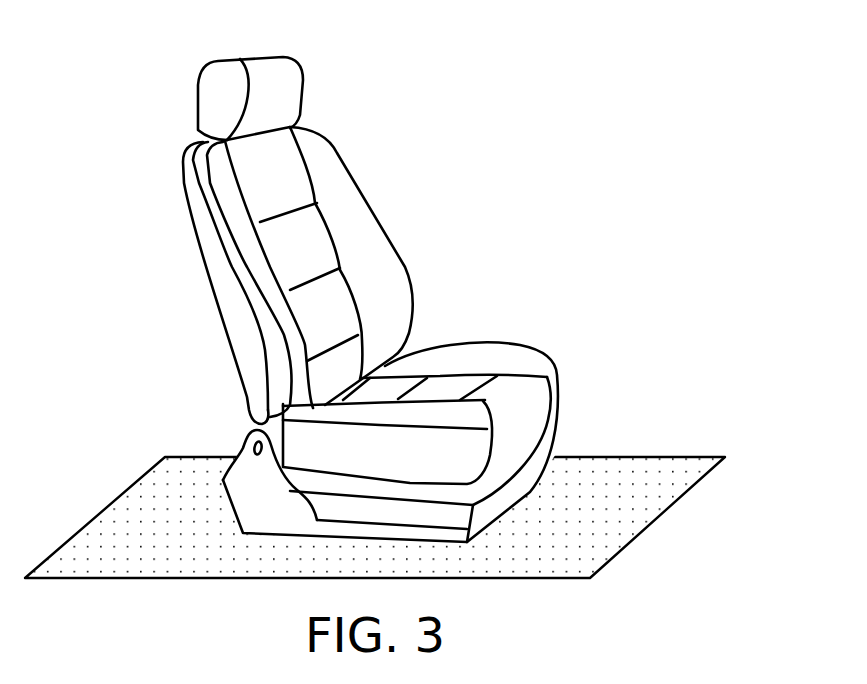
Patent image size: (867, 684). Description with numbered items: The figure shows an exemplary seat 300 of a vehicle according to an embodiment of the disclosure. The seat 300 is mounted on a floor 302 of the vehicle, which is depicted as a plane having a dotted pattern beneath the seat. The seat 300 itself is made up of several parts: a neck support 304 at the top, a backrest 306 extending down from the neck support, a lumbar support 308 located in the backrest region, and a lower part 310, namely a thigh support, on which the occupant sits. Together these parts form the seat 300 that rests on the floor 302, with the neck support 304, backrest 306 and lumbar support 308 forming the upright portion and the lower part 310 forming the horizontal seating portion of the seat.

The seat 300 is at (555, 63).
The floor 302 is at (375, 517).
The neck support 304 is at (188, 98).
The backrest 306 is at (178, 142).
The lumbar support 308 is at (385, 253).
The lower part 310 is at (415, 404).